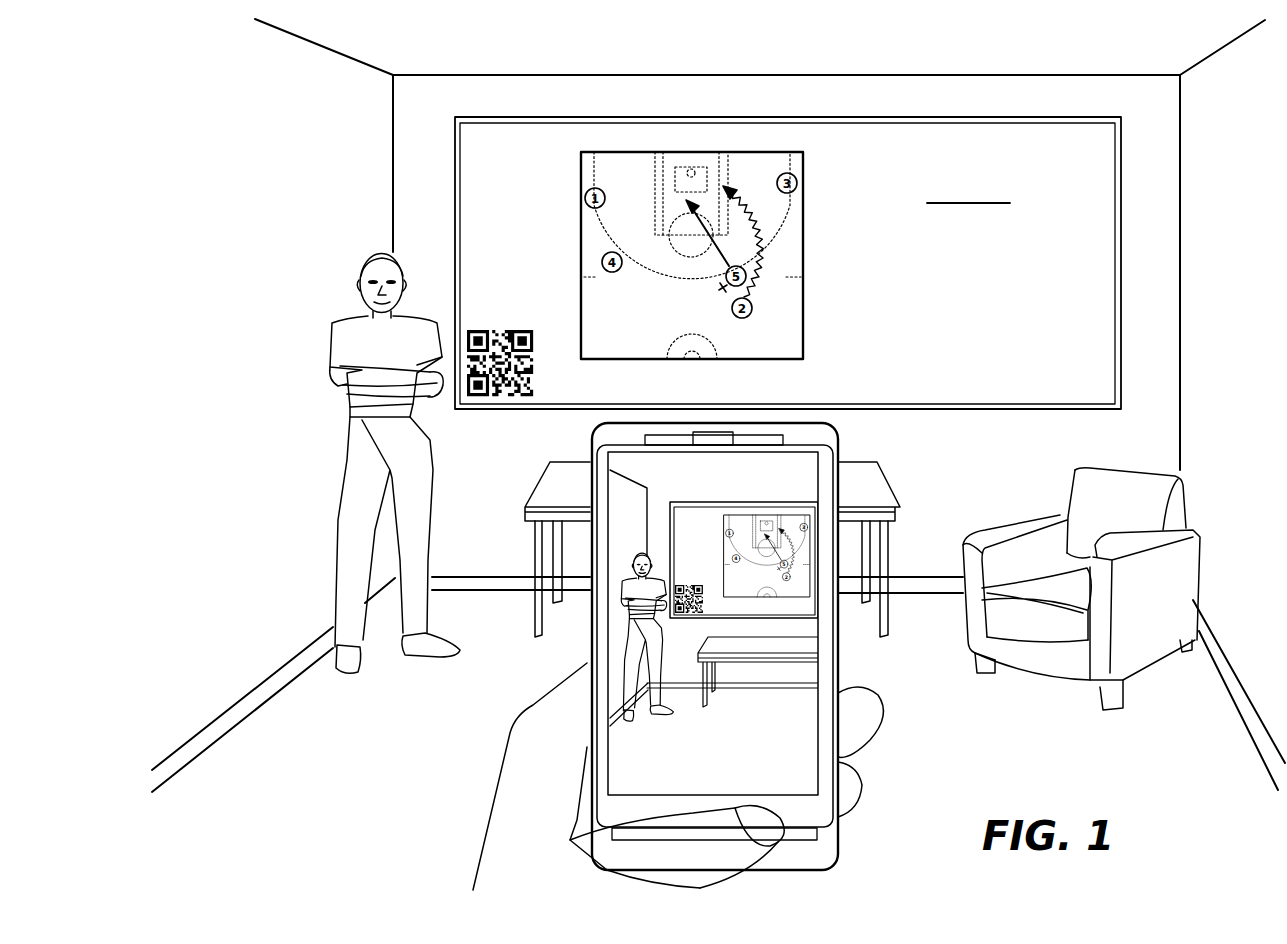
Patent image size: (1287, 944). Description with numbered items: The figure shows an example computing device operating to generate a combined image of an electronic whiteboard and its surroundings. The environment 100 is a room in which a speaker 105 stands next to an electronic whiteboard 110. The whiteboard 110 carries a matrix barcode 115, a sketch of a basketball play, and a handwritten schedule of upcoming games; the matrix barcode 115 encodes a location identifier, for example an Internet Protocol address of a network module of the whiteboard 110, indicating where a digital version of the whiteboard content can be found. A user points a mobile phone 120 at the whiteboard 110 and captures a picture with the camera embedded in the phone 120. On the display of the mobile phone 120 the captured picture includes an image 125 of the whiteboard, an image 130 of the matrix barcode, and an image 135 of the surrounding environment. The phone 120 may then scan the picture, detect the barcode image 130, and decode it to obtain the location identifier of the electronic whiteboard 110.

The environment 100 is at (203, 82).
The speaker 105 is at (330, 334).
The electronic whiteboard 110 is at (488, 116).
The matrix barcode 115 is at (500, 330).
The mobile phone 120 is at (836, 427).
The image of the whiteboard 125 is at (702, 512).
The image of the matrix barcode 130 is at (690, 586).
The image of the surrounding environment 135 is at (800, 718).